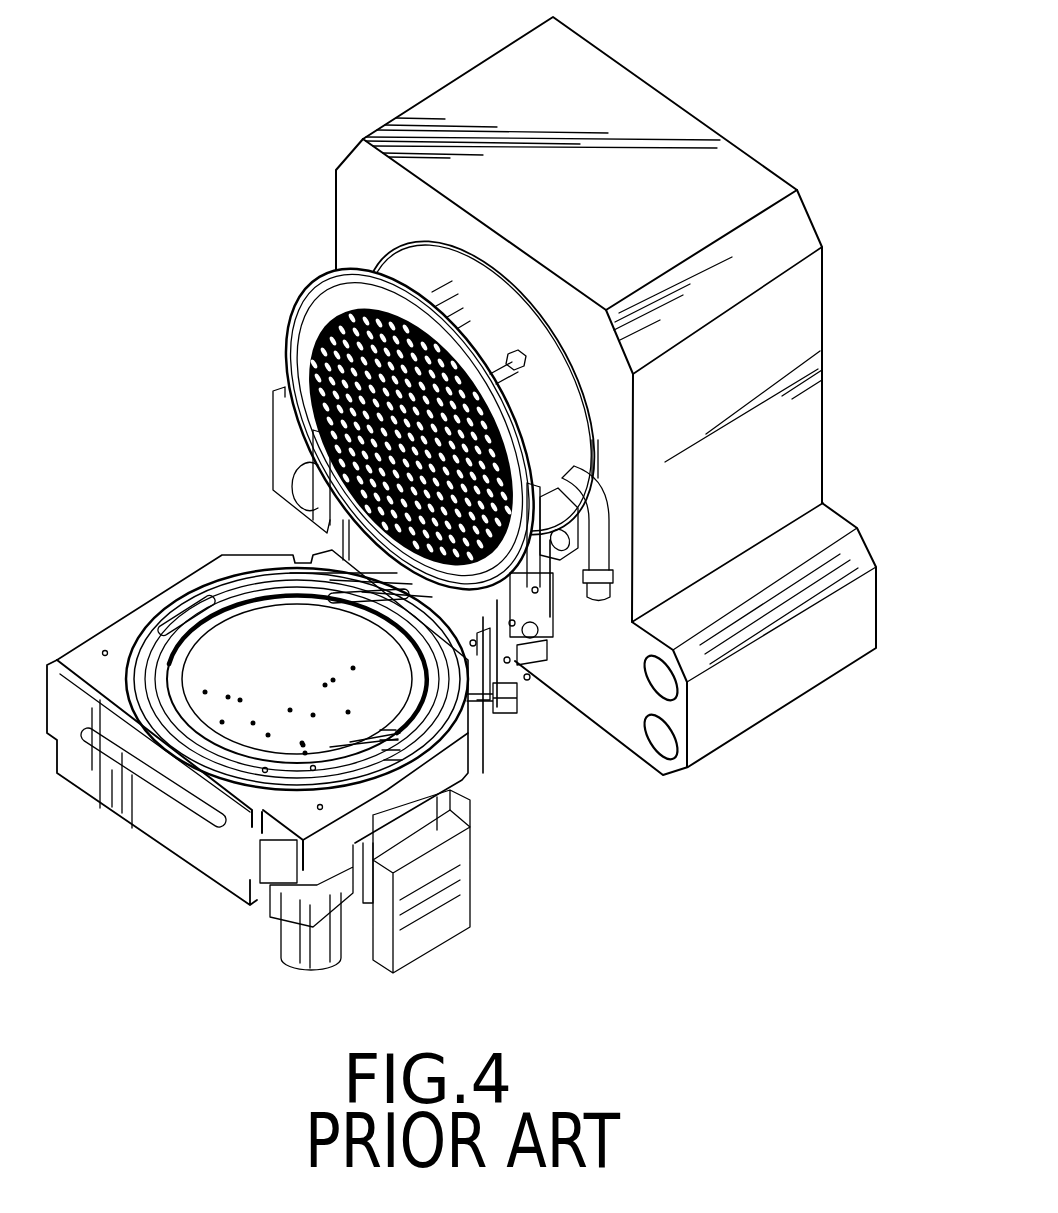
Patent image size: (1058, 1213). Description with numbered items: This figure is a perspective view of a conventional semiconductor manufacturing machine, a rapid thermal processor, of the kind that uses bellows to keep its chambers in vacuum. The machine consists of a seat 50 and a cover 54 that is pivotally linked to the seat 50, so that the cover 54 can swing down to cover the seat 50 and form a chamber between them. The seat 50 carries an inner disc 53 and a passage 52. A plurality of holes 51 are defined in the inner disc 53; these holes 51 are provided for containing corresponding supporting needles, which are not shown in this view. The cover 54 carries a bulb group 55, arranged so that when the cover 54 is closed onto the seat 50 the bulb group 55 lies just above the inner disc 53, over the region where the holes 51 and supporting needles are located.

The seat 50 is at (210, 873).
The holes 51 is at (232, 718).
The passage 52 is at (127, 762).
The inner disc 53 is at (415, 740).
The cover 54 is at (666, 106).
The bulb group 55 is at (292, 343).